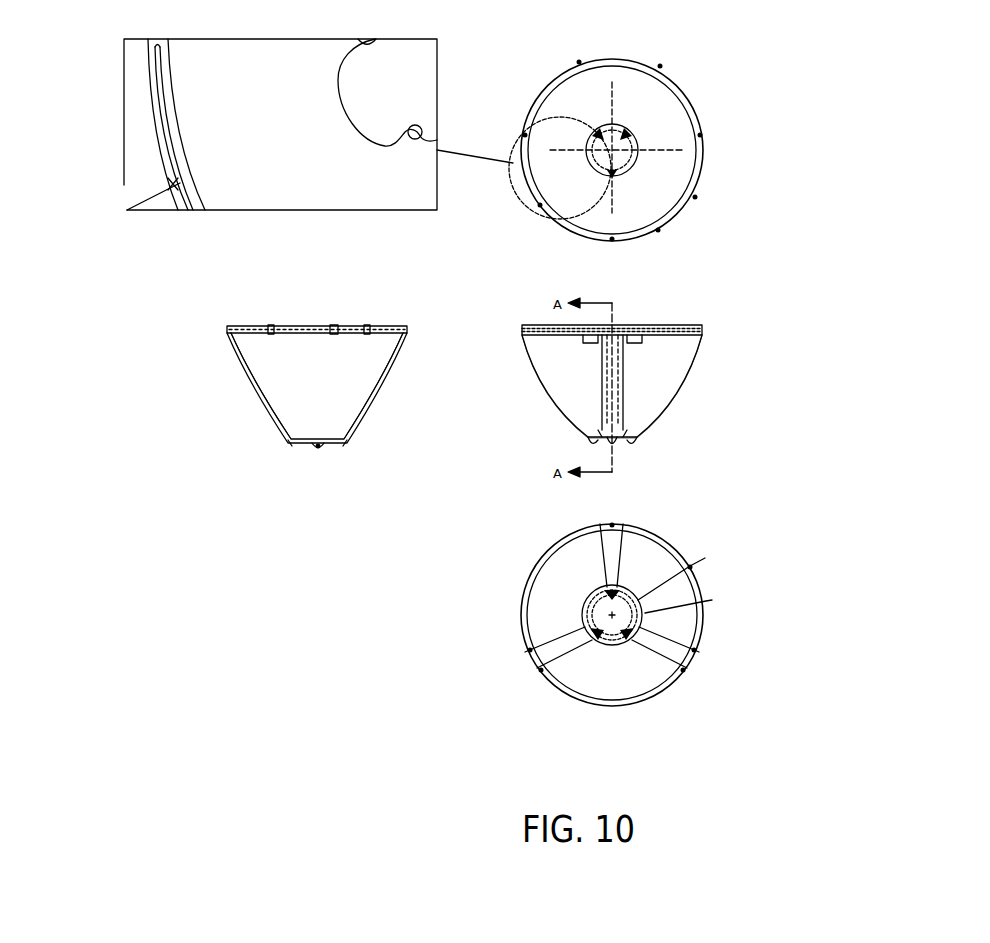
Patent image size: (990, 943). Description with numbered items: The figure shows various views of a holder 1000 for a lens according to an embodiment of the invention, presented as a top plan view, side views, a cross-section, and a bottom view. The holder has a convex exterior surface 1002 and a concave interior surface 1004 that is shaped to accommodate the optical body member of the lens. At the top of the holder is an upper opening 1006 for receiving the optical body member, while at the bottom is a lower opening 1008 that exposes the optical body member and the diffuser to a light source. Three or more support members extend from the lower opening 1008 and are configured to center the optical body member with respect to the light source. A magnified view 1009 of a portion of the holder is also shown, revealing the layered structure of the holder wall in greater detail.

The reflector assembly 1000 is at (878, 146).
The convex exterior surface 1002 is at (670, 230).
The concave interior surface 1004 is at (372, 390).
The upper opening 1006 is at (288, 322).
The lower opening 1008 is at (640, 158).
The magnified view of a portion of the holder 1009 is at (348, 212).